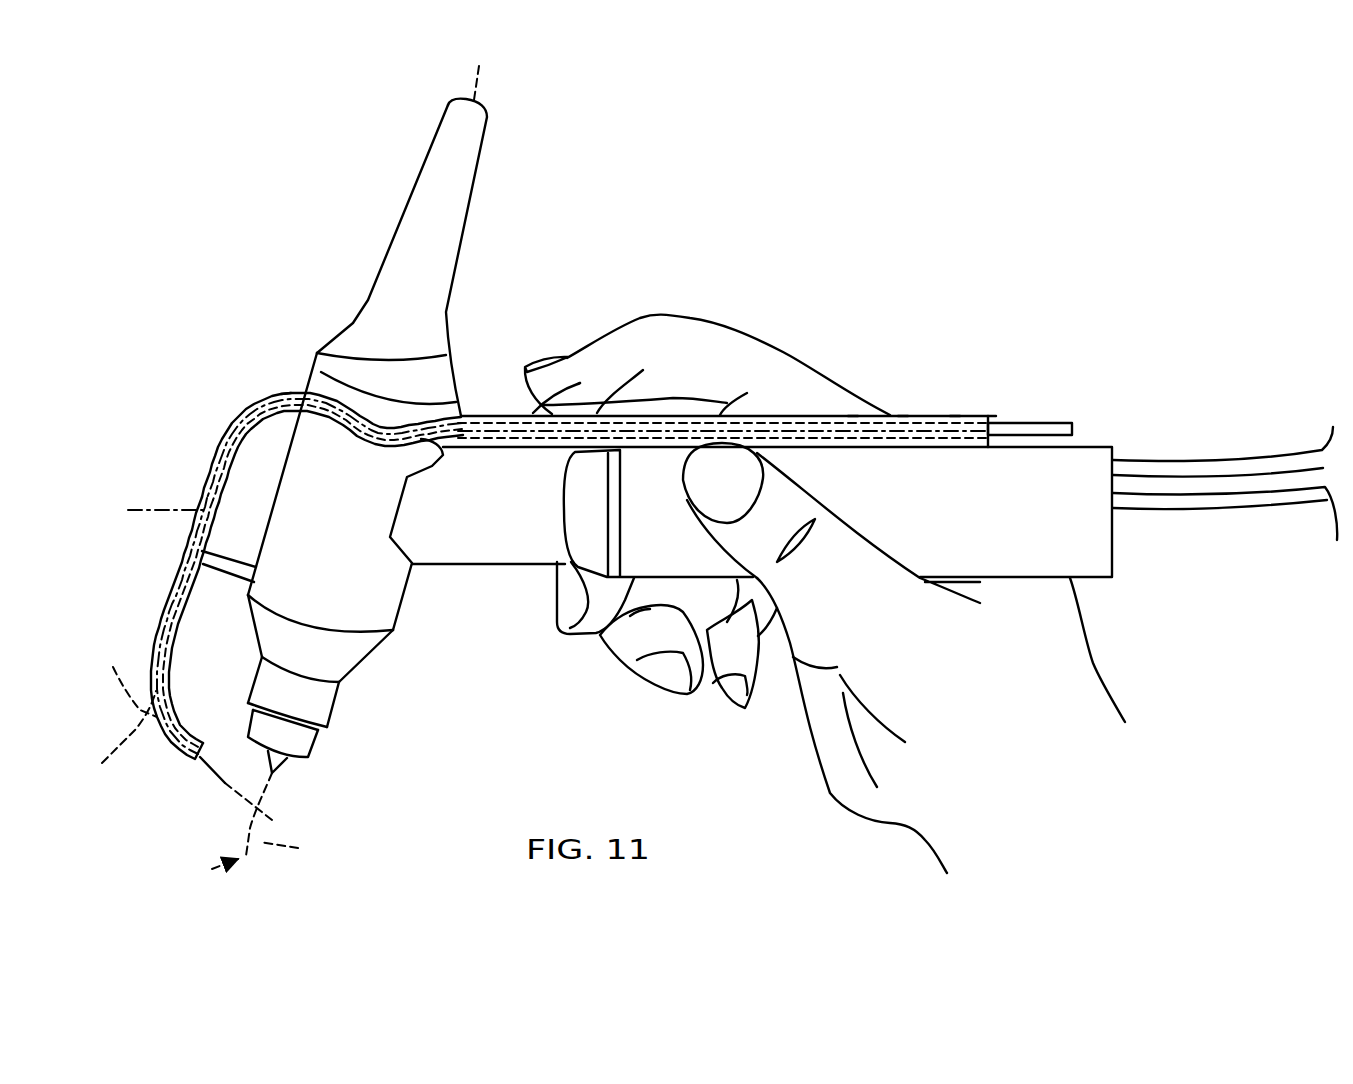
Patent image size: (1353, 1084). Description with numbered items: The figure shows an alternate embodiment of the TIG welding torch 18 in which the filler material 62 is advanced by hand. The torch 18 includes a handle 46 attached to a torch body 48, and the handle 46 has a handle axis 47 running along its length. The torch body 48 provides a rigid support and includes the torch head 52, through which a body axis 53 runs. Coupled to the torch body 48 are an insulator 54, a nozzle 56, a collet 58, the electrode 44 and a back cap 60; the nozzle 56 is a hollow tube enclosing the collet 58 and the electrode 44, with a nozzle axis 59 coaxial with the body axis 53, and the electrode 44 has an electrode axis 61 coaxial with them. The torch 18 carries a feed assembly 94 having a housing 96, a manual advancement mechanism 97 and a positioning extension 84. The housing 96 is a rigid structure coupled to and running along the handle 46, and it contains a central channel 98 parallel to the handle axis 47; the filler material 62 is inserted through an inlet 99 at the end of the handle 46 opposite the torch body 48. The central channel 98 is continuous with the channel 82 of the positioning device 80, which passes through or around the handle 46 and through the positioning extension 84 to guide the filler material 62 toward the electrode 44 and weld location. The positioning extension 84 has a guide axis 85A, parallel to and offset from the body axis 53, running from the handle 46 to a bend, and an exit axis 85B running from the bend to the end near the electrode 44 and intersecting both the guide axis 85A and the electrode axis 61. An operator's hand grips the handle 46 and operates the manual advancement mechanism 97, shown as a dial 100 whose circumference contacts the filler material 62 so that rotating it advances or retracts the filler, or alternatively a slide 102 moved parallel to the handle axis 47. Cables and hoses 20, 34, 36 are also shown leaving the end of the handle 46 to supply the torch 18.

The TIG welding torch 18 is at (682, 250).
The cable assembly 20 is at (1192, 462).
The power cable 34 is at (1245, 487).
The gas hose 36 is at (1247, 512).
The electrode 44 is at (283, 754).
The handle 46 is at (1097, 578).
The handle axis 47 is at (158, 512).
The torch body 48 is at (431, 697).
The torch head 52 is at (400, 608).
The body axis 53 is at (476, 94).
The insulator 54 is at (352, 652).
The nozzle 56 is at (334, 702).
The collet 58 is at (318, 738).
The nozzle axis 59 is at (296, 851).
The back cap 60 is at (408, 214).
The electrode axis 61 is at (209, 871).
The filler material 62 is at (1032, 422).
The positioning device 80 is at (226, 403).
The channel 82 is at (287, 393).
The positioning extension 84 is at (196, 497).
The guide axis 85A is at (120, 743).
The exit axis 85B is at (126, 677).
The feed assembly 94 is at (790, 316).
The housing 96 is at (903, 408).
The manual advancement mechanism 97 is at (528, 340).
The central channel 98 is at (853, 418).
The inlet 99 is at (992, 415).
The dial 100 is at (530, 405).
The slide 102 is at (603, 374).